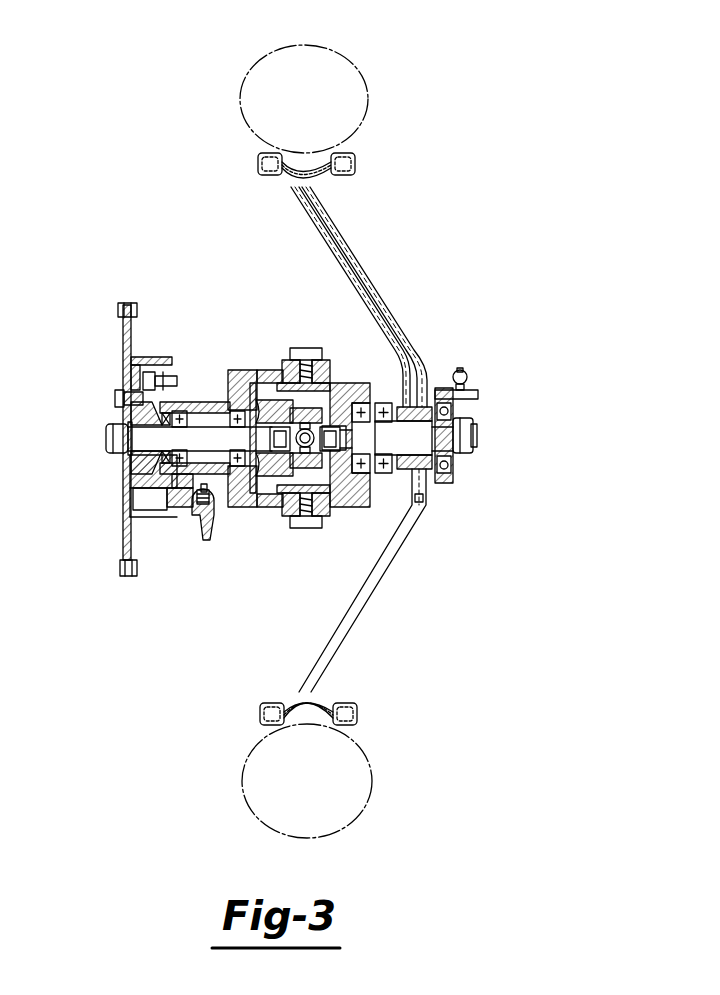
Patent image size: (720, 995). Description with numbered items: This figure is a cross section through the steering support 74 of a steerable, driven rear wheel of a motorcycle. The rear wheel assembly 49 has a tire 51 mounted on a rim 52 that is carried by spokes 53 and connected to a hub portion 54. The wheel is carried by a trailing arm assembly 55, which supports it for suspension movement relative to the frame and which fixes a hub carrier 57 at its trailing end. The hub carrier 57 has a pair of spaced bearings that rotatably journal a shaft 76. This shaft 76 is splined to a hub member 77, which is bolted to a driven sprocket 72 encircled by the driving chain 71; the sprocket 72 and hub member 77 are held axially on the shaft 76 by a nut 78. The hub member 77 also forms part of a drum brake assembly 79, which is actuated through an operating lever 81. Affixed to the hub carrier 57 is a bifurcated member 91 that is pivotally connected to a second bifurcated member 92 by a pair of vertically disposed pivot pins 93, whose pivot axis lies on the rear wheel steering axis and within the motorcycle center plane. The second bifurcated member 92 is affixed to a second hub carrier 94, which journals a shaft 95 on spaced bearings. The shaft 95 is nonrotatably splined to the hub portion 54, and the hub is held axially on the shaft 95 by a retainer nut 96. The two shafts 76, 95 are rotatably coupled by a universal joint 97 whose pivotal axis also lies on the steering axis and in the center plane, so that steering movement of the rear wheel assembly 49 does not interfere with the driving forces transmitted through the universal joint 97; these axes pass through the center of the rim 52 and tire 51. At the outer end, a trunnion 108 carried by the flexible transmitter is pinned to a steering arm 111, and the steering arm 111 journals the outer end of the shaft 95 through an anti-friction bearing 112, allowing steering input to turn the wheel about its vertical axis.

The rear wheel assembly 49 is at (386, 296).
The tire 51 is at (368, 106).
The rim 52 is at (353, 158).
The spokes 53 is at (406, 331).
The hub portion 54 is at (426, 503).
The trailing arm assembly 55 is at (201, 400).
The hub carrier 57 is at (183, 490).
The driving chain 71 is at (140, 305).
The driven sprocket 72 is at (125, 350).
The steering support 74 is at (271, 601).
The shaft 76 is at (127, 457).
The hub member 77 is at (118, 413).
The nut 78 is at (120, 453).
The drum brake assembly 79 is at (152, 356).
The operating lever 81 is at (203, 528).
The bifurcated member 91 is at (260, 380).
The second bifurcated member 92 is at (330, 380).
The pivot pins 93 is at (310, 350).
The second hub carrier 94 is at (355, 500).
The shaft 95 is at (400, 430).
The retainer nut 96 is at (480, 421).
The universal joint 97 is at (243, 492).
The trunnion 108 is at (474, 374).
The steering arm 111 is at (482, 395).
The anti-friction bearing 112 is at (455, 468).